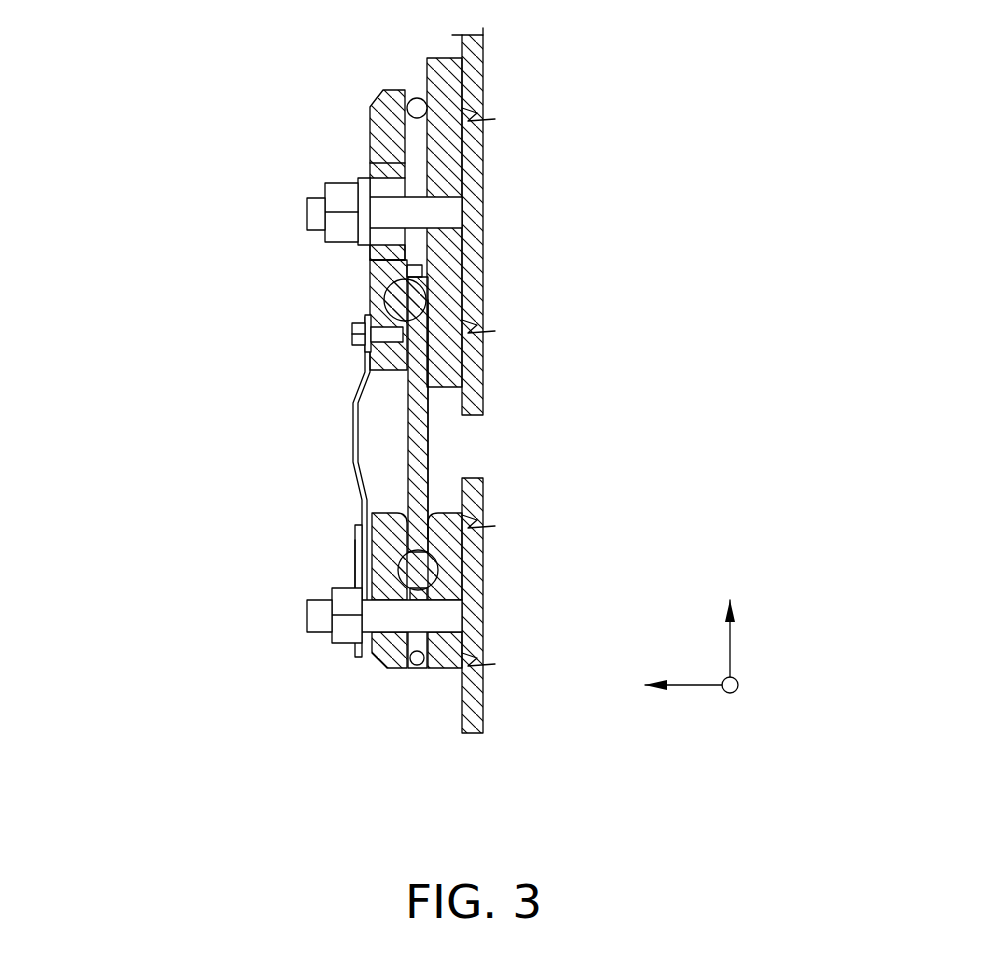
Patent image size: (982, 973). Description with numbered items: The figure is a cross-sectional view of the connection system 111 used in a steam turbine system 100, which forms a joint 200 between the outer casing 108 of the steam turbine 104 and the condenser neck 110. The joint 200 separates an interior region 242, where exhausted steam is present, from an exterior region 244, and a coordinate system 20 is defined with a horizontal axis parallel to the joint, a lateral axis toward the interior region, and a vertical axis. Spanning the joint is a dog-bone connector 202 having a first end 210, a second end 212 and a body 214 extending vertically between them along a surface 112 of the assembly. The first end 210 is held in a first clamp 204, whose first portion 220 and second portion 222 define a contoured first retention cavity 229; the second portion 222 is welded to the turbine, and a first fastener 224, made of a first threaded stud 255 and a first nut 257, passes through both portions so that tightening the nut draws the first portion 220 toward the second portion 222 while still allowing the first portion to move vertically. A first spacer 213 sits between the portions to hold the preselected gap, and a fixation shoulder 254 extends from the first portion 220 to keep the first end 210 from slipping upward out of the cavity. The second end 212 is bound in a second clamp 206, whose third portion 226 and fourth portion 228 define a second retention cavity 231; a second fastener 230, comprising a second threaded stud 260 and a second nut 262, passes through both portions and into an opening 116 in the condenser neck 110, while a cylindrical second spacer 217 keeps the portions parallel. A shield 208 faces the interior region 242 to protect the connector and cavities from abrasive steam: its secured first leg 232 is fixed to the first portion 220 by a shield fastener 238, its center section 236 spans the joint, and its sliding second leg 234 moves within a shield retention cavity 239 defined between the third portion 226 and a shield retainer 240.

The coordinate system 20 is at (695, 655).
The steam turbine system 100 is at (612, 380).
The steam turbine 104 is at (546, 380).
The outer casing 108 is at (483, 155).
The condenser neck 110 is at (483, 512).
The connection system 111 is at (658, 217).
The interior side 112 is at (520, 208).
The opening 116 is at (498, 618).
The joint 200 is at (405, 376).
The dog-bone connector 202 is at (481, 438).
The first clamp 204 is at (396, 202).
The second clamp 206 is at (330, 605).
The shield 208 is at (327, 458).
The first end 210 is at (398, 282).
The second end 212 is at (375, 585).
The first spacer 213 is at (410, 98).
The body 214 is at (428, 466).
The second spacer 217 is at (417, 665).
The first portion 220 is at (388, 128).
The second portion 222 is at (455, 128).
The first fastener 224 is at (331, 202).
The third portion 226 is at (387, 663).
The fourth portion 228 is at (447, 652).
The first retention cavity 229 is at (402, 358).
The second fastener 230 is at (339, 650).
The second retention cavity 231 is at (395, 497).
The first leg 232 is at (315, 338).
The second leg 234 is at (363, 505).
The center section 236 is at (352, 412).
The shield fastener 238 is at (372, 355).
The shield retention cavity 239 is at (355, 558).
The shield retainer 240 is at (298, 579).
The interior region 242 is at (83, 357).
The exterior region 244 is at (838, 341).
The fixation shoulder 254 is at (425, 270).
The first threaded stud 255 is at (315, 220).
The first nut 257 is at (342, 228).
The second threaded stud 260 is at (305, 607).
The second nut 262 is at (345, 633).